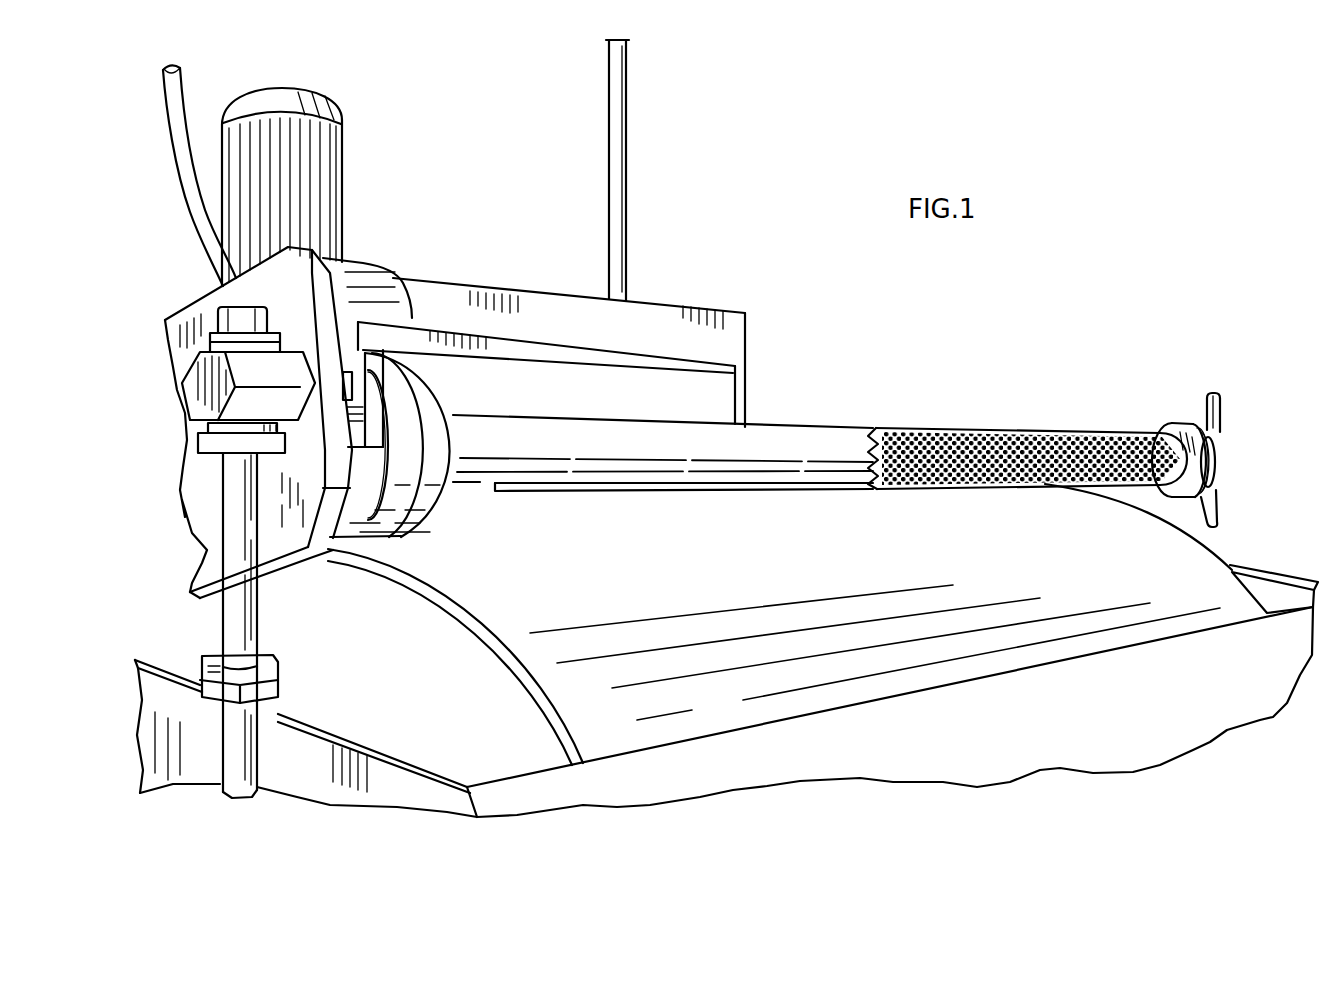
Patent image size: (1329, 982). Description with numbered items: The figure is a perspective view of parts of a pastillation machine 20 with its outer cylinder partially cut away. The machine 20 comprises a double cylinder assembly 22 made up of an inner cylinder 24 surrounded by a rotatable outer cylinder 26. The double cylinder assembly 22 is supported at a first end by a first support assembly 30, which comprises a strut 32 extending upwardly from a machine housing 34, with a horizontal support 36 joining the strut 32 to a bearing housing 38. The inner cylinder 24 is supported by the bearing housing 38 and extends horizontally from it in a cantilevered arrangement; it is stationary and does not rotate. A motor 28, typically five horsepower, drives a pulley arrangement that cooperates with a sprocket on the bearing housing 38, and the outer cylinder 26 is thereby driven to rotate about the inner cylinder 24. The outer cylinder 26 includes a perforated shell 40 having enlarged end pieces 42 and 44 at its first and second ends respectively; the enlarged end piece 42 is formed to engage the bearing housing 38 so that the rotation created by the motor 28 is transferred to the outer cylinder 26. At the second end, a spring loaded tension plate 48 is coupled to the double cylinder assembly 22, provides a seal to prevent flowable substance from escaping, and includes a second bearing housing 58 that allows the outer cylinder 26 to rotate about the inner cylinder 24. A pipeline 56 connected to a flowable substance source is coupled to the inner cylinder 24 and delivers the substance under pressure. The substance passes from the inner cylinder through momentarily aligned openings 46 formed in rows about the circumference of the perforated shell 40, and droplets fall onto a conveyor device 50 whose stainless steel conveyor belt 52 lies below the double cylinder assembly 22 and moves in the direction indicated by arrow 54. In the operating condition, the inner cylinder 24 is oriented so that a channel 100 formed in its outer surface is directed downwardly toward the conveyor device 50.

The pastillation machine 20 is at (961, 361).
The double cylinder assembly 22 is at (872, 425).
The inner cylinder 24 is at (763, 432).
The outer cylinder 26 is at (1080, 436).
The motor 28 is at (336, 178).
The first support assembly 30 is at (220, 488).
The strut 32 is at (257, 621).
The machine housing 34 is at (167, 695).
The horizontal support 36 is at (287, 348).
The bearing housing 38 is at (398, 385).
The perforated shell 40 is at (980, 427).
The enlarged end piece 42 is at (440, 398).
The enlarged end piece 44 is at (1172, 425).
The openings 46 is at (1075, 472).
The tension plate 48 is at (1217, 452).
The conveyor device 50 is at (595, 702).
The conveyor belt 52 is at (713, 700).
The arrow 54 is at (342, 578).
The pipeline 56 is at (200, 213).
The second bearing housing 58 is at (1216, 487).
The channel 100 is at (790, 492).